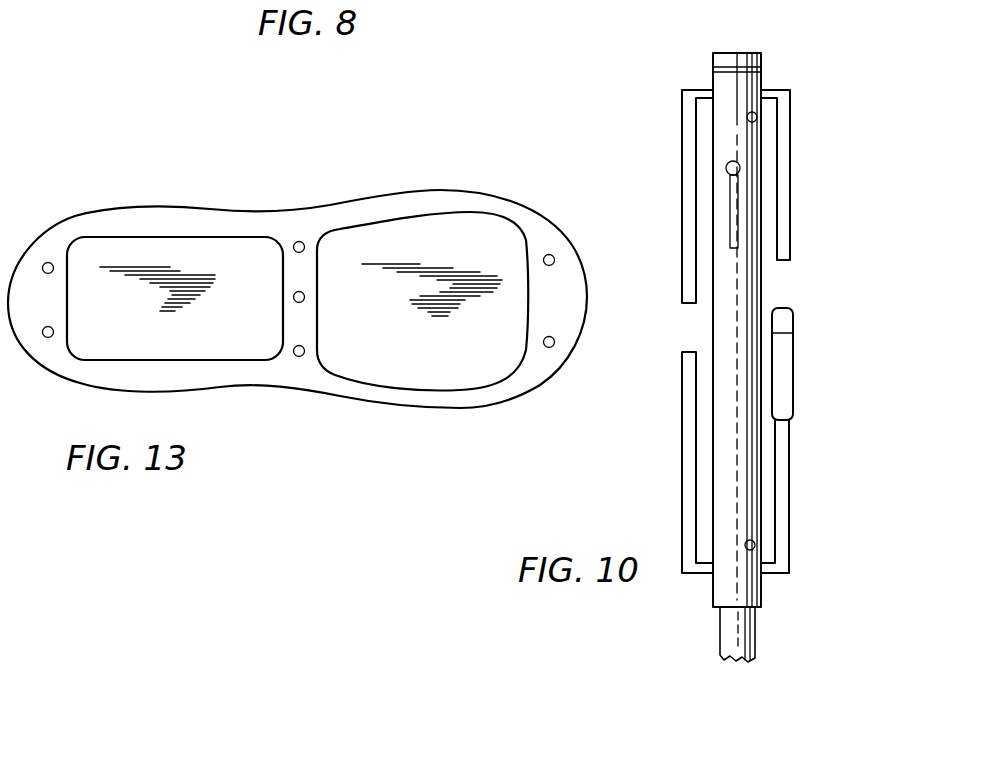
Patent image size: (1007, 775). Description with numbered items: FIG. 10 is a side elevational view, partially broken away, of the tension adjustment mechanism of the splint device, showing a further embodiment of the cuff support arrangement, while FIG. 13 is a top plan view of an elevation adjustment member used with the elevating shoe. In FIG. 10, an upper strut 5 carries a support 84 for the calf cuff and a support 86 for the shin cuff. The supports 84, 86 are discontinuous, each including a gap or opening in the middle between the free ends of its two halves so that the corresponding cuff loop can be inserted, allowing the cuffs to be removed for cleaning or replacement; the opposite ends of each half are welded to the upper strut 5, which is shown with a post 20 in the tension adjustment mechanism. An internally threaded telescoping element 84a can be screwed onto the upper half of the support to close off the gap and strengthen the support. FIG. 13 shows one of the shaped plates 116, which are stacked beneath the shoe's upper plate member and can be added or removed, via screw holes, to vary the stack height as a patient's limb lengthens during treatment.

In FIG. 13, the shaped plate 116 is at (437, 197).
In FIG. 10, the post 20 is at (747, 294).
In FIG. 10, the support 86 is at (680, 150).
In FIG. 10, the support 84 is at (792, 137).
In FIG. 10, the internally threaded telescoping element 84a is at (793, 390).
In FIG. 10, the upper strut 5 is at (720, 636).